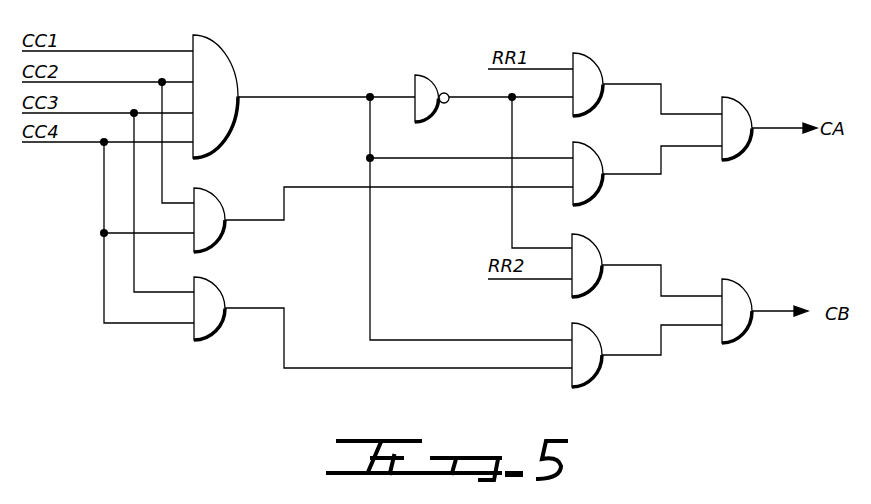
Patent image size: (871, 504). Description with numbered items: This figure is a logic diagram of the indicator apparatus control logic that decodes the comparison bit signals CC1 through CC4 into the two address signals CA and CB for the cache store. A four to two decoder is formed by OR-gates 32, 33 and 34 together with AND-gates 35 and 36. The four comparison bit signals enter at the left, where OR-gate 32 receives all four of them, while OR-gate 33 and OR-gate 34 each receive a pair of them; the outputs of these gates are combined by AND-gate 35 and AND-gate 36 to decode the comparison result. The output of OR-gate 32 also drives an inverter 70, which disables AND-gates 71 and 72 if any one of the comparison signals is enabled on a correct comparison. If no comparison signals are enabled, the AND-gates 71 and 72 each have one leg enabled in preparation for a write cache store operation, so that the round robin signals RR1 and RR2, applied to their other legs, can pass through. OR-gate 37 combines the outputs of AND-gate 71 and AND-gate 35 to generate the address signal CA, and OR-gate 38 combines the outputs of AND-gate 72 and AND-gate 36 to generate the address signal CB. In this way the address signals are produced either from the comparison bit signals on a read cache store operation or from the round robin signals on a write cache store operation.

The OR-gate 32 is at (233, 71).
The OR-gate 33 is at (222, 238).
The OR-gate 34 is at (221, 333).
The AND-gate 35 is at (598, 192).
The AND-gate 36 is at (597, 372).
The OR-gate 37 is at (740, 104).
The OR-gate 38 is at (742, 289).
The inverter 70 is at (416, 78).
The AND-gate 71 is at (599, 68).
The AND-gate 72 is at (600, 250).